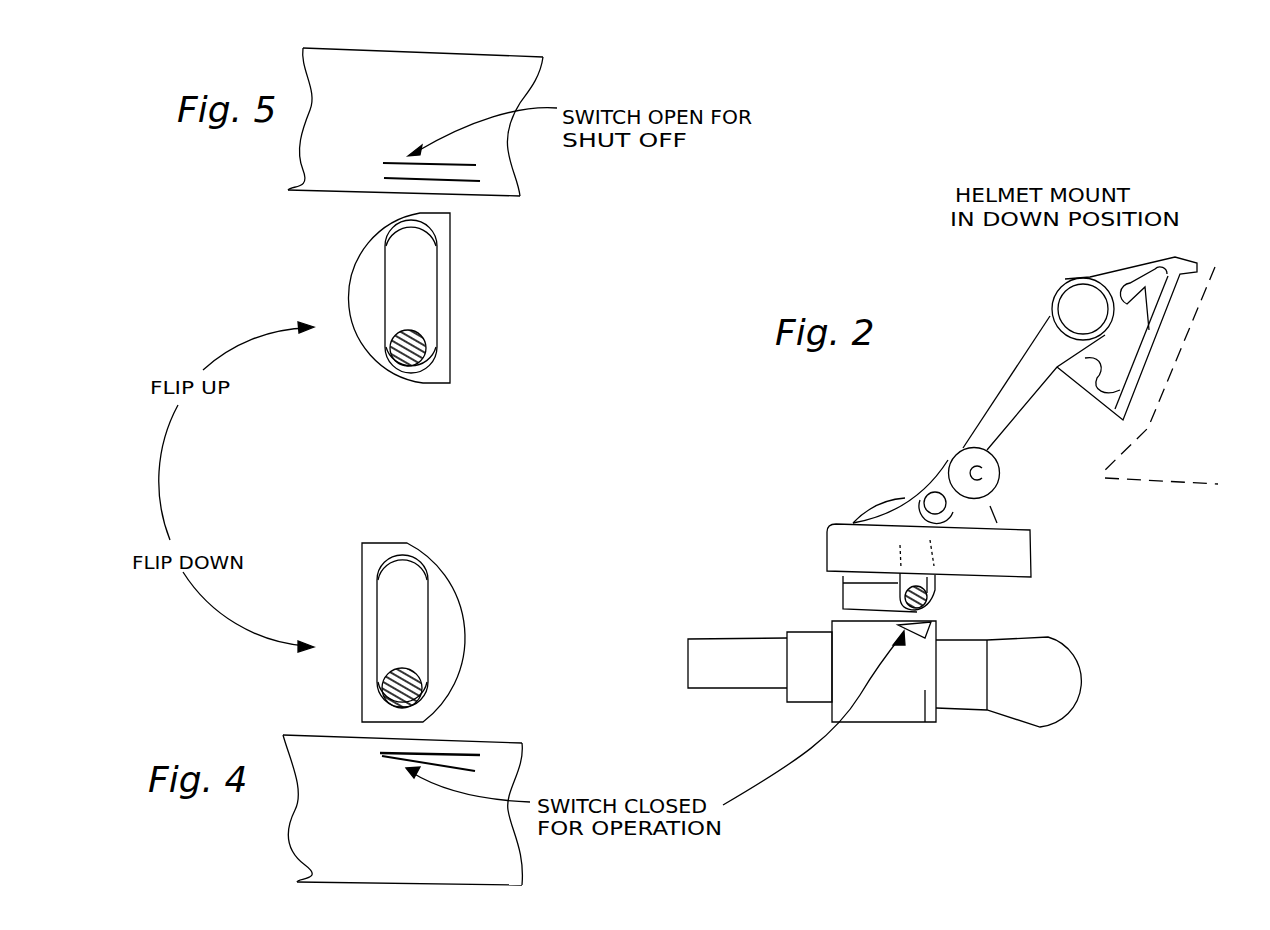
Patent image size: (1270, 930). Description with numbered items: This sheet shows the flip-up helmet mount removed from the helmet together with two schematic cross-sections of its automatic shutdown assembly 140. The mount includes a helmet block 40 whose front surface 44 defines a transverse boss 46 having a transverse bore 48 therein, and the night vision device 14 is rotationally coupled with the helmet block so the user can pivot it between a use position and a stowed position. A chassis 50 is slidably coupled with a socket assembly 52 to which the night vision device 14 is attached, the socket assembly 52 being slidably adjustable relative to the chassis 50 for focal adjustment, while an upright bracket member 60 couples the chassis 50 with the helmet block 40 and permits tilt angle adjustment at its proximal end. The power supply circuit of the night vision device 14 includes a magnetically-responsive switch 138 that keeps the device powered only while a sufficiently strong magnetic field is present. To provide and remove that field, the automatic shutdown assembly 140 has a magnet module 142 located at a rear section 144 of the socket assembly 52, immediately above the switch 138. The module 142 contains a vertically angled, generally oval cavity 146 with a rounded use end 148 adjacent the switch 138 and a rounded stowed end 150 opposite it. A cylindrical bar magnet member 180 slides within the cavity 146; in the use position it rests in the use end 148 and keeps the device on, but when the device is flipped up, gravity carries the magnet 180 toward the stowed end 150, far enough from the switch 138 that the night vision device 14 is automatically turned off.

In FIG. 2, the night vision device 14 is at (805, 632).
In FIG. 2, the helmet block 40 is at (1085, 410).
In FIG. 2, the front surface 44 is at (1115, 270).
In FIG. 2, the transverse boss 46 is at (1068, 283).
In FIG. 2, the transverse bore 48 is at (1055, 301).
In FIG. 2, the chassis 50 is at (878, 491).
In FIG. 2, the socket assembly 52 is at (1030, 548).
In FIG. 2, the bracket member 60 is at (993, 404).
In FIG. 2, the magnetically-responsive switch 138 is at (933, 625).
In FIG. 4, the automatic shutdown assembly 140 is at (481, 591).
In FIG. 2, the automatic shutdown assembly 140 is at (958, 600).
In FIG. 5, the magnet module 142 is at (452, 266).
In FIG. 4, the magnet module 142 is at (448, 606).
In FIG. 2, the rear section 144 is at (882, 547).
In FIG. 5, the cavity 146 is at (425, 309).
In FIG. 5, the use end 148 is at (430, 236).
In FIG. 4, the use end 148 is at (415, 708).
In FIG. 5, the stowed end 150 is at (440, 385).
In FIG. 4, the stowed end 150 is at (408, 557).
In FIG. 5, the bar magnet member 180 is at (402, 354).
In FIG. 4, the bar magnet member 180 is at (415, 677).
In FIG. 2, the bar magnet member 180 is at (928, 598).